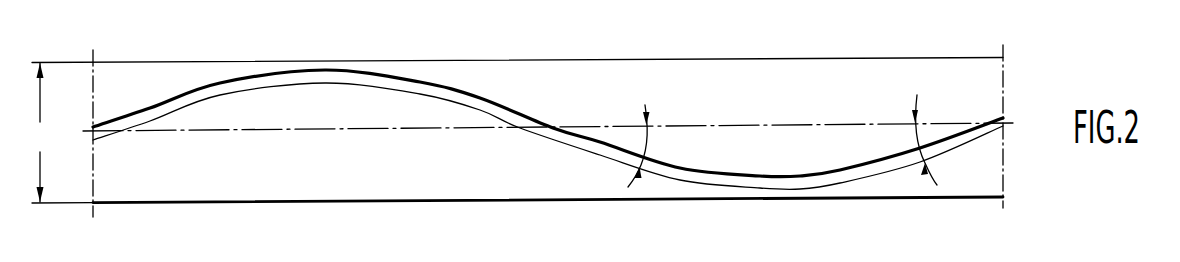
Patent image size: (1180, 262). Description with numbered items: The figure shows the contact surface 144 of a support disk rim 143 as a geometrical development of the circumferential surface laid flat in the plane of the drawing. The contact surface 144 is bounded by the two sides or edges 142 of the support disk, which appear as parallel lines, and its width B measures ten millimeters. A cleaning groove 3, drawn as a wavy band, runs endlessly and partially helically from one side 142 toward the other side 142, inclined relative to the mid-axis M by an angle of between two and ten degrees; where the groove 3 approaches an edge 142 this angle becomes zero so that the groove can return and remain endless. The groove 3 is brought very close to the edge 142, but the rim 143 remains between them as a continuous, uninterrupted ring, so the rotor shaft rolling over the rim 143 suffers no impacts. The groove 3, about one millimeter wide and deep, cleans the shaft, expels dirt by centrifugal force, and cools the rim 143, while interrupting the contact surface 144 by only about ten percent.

The side edge of the support disk 142 is at (398, 61).
The rim 143 is at (245, 116).
The cleaning groove 3 is at (325, 76).
The contact surface 144 is at (611, 82).
The mid-axis M is at (438, 133).
The width of the contact surface B is at (40, 132).